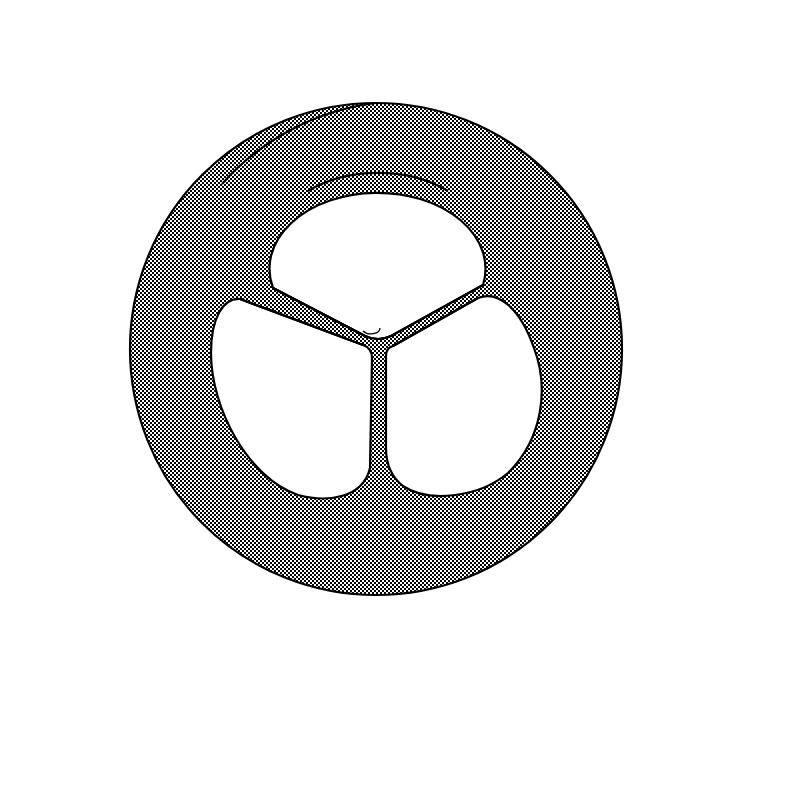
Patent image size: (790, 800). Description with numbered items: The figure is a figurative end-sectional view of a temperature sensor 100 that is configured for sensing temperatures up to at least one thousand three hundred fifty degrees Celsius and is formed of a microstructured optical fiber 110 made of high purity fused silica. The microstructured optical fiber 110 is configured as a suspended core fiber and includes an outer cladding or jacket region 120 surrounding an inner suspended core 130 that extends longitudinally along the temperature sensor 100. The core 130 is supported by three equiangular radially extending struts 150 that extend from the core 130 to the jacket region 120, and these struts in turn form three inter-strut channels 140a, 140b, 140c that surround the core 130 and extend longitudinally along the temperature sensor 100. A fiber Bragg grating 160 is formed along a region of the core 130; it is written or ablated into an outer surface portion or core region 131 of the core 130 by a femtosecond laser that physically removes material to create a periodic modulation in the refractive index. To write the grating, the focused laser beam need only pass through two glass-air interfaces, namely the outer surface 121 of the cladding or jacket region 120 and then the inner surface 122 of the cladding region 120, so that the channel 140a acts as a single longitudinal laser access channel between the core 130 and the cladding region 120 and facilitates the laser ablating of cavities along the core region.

The temperature sensor 100 is at (200, 160).
The microstructured optical fiber 110 is at (515, 140).
The outer cladding or jacket region 120 is at (543, 233).
The outer surface 121 is at (283, 112).
The inner surface 122 is at (396, 171).
The inner suspended core 130 is at (345, 338).
The outer surface portion or core region 131 is at (352, 320).
The inter-strut channel 140a is at (396, 241).
The inter-strut channel 140b is at (310, 411).
The inter-strut channel 140c is at (478, 411).
The radially extending struts 150 is at (432, 310).
The fiber Bragg grating 160 is at (372, 320).